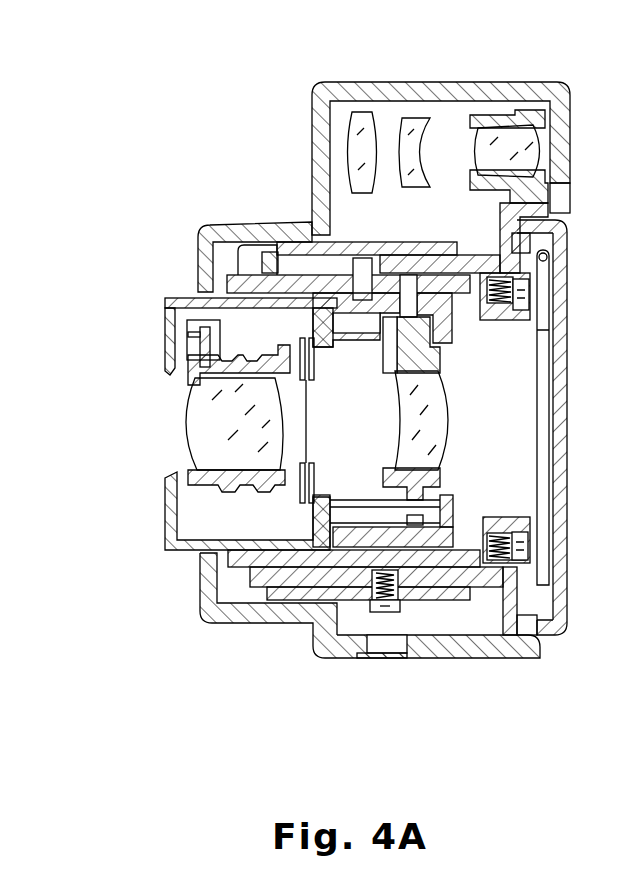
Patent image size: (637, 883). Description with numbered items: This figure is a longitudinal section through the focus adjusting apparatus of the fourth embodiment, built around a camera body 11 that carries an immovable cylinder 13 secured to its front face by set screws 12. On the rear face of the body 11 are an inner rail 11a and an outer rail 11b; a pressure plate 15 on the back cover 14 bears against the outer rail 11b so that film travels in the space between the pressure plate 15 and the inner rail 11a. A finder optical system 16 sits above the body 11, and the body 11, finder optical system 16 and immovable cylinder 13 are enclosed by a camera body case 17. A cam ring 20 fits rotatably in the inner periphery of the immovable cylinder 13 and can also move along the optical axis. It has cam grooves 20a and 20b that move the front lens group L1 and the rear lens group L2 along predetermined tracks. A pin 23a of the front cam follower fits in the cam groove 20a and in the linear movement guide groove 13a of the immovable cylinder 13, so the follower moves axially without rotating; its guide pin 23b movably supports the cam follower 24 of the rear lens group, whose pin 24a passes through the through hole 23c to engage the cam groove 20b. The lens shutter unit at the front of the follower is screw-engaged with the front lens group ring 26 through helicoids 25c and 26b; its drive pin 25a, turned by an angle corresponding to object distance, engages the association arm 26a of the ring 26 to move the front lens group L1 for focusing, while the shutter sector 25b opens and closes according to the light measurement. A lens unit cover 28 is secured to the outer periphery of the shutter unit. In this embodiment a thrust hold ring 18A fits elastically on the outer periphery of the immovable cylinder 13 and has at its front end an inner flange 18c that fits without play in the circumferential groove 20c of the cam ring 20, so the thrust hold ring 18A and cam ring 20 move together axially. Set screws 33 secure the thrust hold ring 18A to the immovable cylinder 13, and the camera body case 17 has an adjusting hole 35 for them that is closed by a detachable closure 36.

The camera body 11 is at (530, 247).
The inner rail 11a is at (549, 315).
The outer rail 11b is at (548, 256).
The set screw 12 is at (528, 292).
The immovable cylinder 13 is at (243, 262).
The linear movement guide groove 13a is at (263, 257).
The back cover 14 is at (568, 577).
The pressure plate 15 is at (547, 480).
The finder optical system 16 is at (452, 112).
The camera body case 17 is at (503, 650).
The thrust hold ring 18A is at (270, 600).
The inner flange 18c is at (238, 260).
The cam ring 20 is at (305, 282).
The cam groove 20a is at (392, 305).
The cam groove 20b is at (445, 313).
The circumferential groove 20c is at (238, 273).
The pin 23a is at (358, 258).
The guide pin 23b is at (340, 333).
The through hole 23c is at (390, 372).
The cam follower for the rear lens group 24 is at (440, 357).
The pin 24a is at (407, 275).
The drive pin 25a is at (190, 334).
The shutter sector 25b is at (308, 450).
The helicoid 25c is at (205, 356).
The front lens group ring 26 is at (240, 322).
The association arm 26a is at (190, 320).
The helicoid 26b is at (217, 373).
The lens unit cover 28 is at (165, 542).
The set screw 33 is at (372, 610).
The adjusting hole 35 is at (379, 653).
The closure 36 is at (410, 658).
The front lens group L1 is at (195, 442).
The rear lens group L2 is at (445, 443).